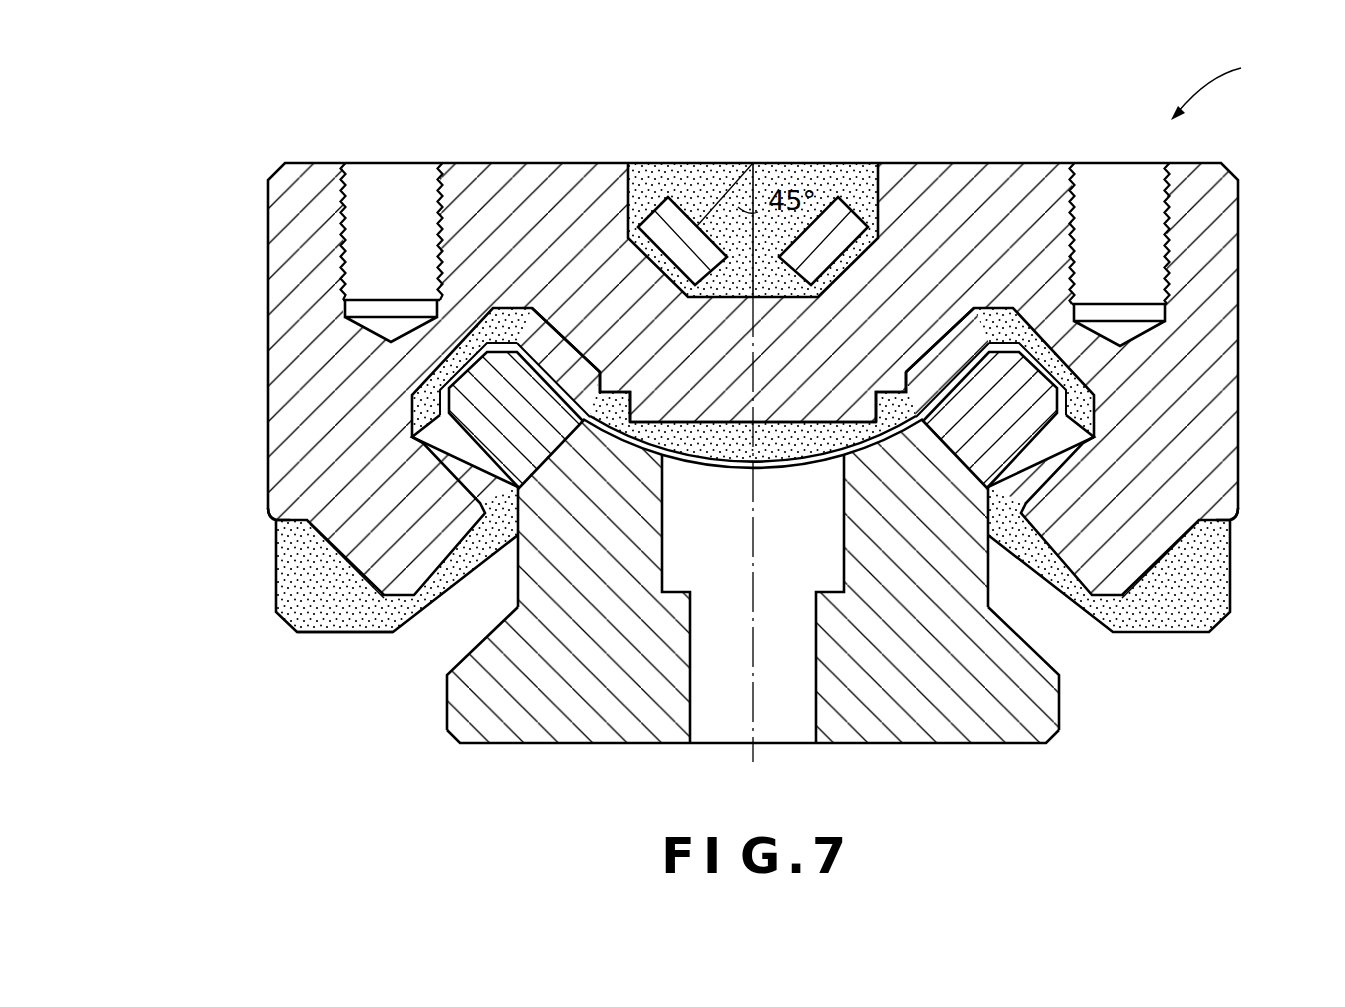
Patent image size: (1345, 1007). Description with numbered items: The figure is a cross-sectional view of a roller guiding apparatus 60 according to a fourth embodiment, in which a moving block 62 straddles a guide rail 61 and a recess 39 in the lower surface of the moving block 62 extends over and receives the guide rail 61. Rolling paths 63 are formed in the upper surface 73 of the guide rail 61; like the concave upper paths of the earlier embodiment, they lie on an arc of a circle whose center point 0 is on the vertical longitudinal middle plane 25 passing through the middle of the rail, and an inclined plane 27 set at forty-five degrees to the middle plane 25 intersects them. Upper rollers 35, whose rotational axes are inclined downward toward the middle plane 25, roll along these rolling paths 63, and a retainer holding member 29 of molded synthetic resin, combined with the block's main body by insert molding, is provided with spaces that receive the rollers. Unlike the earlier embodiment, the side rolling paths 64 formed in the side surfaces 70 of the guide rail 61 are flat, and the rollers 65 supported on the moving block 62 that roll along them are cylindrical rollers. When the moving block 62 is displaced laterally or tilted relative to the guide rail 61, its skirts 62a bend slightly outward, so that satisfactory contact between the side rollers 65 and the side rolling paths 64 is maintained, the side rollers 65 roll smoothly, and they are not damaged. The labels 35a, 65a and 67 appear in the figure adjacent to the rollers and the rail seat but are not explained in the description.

The roller guiding apparatus 60 is at (1227, 83).
The guide rail 61 is at (615, 747).
The moving block 62 is at (568, 175).
The skirts 62a is at (266, 517).
The rolling paths 63 is at (556, 390).
The side rolling paths 64 is at (468, 430).
The rollers 65 is at (452, 447).
The seal face 65a is at (373, 575).
The recess 67 is at (906, 430).
The side surfaces 70 is at (512, 585).
The upper surface 73 is at (902, 437).
The inclined plane 27 is at (633, 292).
The longitudinal middle plane 25 is at (757, 344).
The upper rollers 35 is at (681, 212).
The seal surface 35a is at (610, 343).
The recess 39 is at (810, 424).
The retainer holding member 29 is at (395, 636).
The point O 0 is at (766, 141).